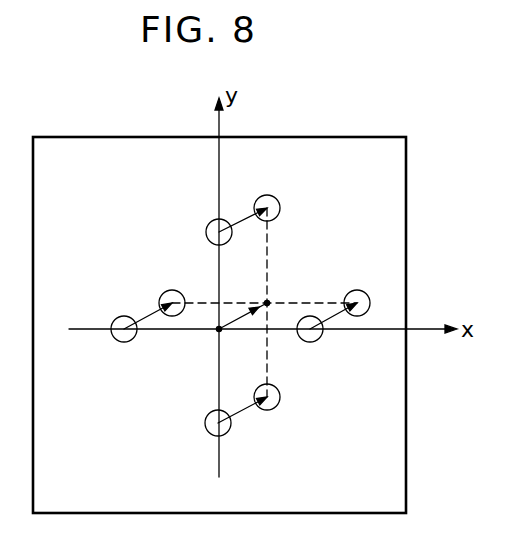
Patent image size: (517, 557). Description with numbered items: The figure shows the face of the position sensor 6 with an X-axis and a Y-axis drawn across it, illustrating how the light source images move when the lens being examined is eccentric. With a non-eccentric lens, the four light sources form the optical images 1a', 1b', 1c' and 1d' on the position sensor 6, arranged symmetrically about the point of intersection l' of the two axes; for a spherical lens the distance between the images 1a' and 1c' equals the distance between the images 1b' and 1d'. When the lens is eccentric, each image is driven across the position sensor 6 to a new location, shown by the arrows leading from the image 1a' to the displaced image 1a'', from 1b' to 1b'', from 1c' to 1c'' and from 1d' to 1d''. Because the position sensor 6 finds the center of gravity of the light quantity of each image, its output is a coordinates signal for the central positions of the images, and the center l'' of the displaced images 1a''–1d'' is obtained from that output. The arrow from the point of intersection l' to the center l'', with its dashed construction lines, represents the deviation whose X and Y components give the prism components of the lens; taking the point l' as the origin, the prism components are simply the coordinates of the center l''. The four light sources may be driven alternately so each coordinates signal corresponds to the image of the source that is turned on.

The position sensor 6 is at (408, 195).
The image of light source 1a 1a' is at (191, 201).
The displaced image of light source 1a 1a'' is at (273, 195).
The image of light source 1b 1b' is at (330, 349).
The displaced image of light source 1b 1b'' is at (350, 289).
The image of light source 1c 1c' is at (239, 441).
The displaced image of light source 1c 1c'' is at (274, 418).
The image of light source 1d 1d' is at (112, 347).
The displaced image of light source 1d 1d'' is at (136, 293).
The point of intersection between the X-axis and the Y-axis l' is at (199, 353).
The center of the displaced optical images l'' is at (263, 300).